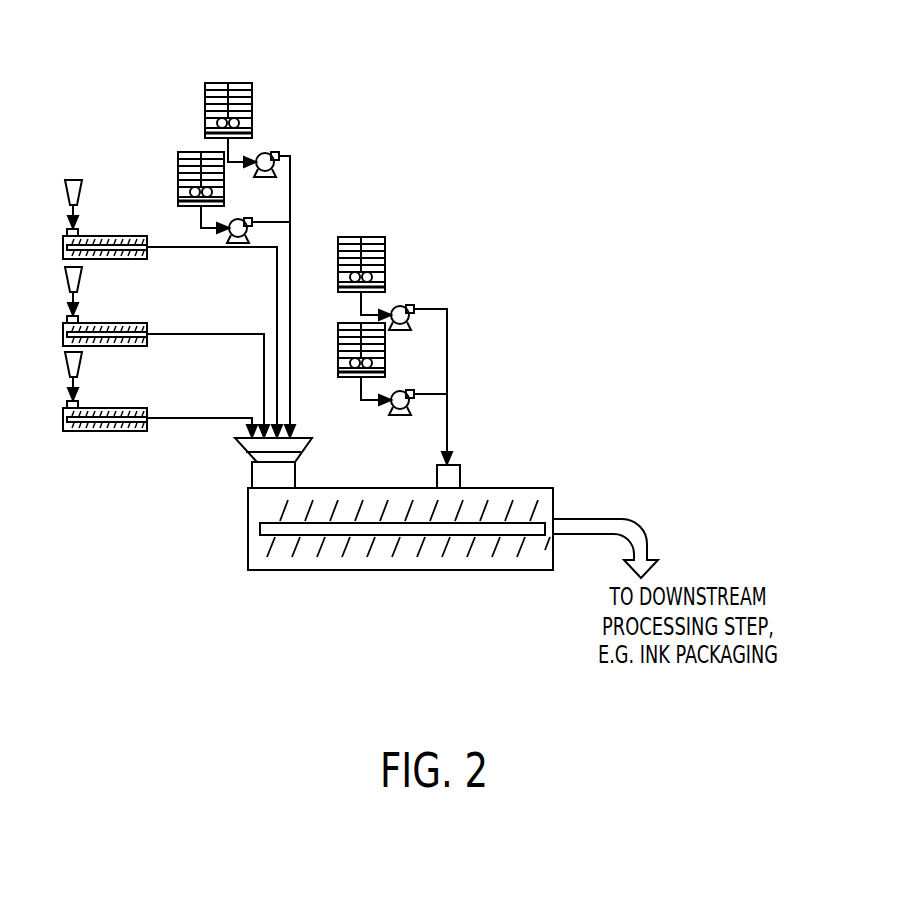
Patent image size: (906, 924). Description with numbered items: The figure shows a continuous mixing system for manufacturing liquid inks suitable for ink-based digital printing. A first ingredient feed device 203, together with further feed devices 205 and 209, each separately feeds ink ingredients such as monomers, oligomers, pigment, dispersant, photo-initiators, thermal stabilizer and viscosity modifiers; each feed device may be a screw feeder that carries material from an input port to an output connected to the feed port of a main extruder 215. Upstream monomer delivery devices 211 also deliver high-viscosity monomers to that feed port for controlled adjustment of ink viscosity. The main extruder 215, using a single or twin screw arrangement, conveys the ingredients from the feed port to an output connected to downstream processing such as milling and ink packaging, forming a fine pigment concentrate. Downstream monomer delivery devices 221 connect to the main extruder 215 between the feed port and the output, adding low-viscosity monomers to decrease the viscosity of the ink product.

The first ingredient feed device 203 is at (147, 255).
The feed device 205 is at (147, 342).
The feed device 209 is at (147, 427).
The upstream monomer delivery device 211 is at (238, 83).
The main extruder 215 is at (248, 535).
The downstream monomer delivery device 221 is at (385, 255).